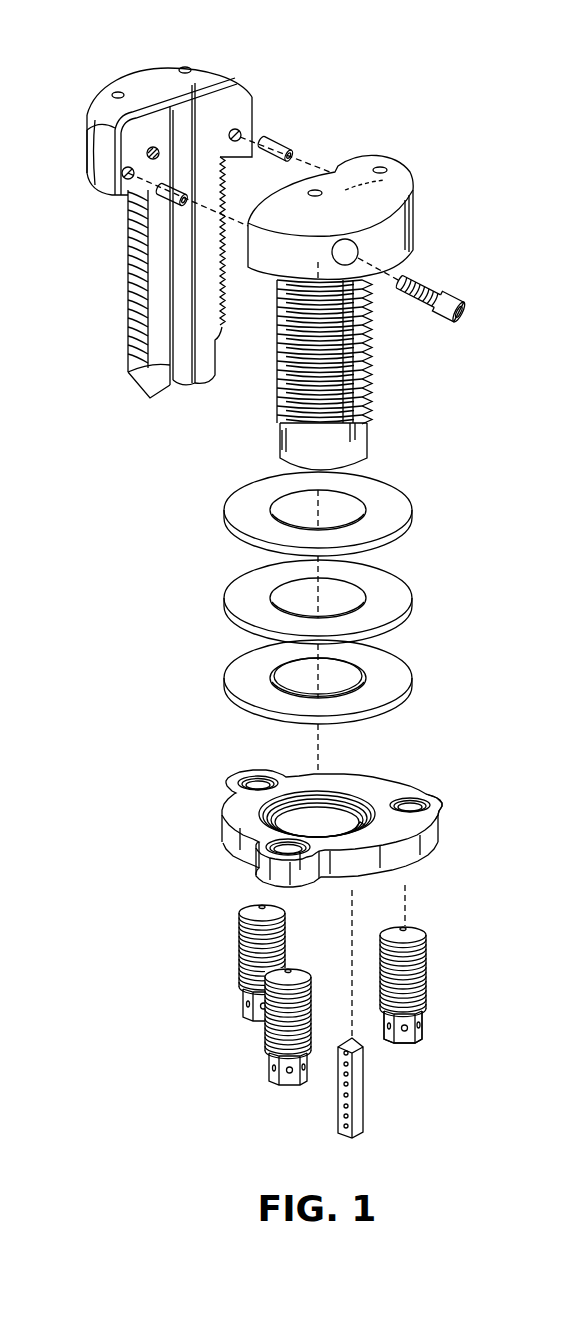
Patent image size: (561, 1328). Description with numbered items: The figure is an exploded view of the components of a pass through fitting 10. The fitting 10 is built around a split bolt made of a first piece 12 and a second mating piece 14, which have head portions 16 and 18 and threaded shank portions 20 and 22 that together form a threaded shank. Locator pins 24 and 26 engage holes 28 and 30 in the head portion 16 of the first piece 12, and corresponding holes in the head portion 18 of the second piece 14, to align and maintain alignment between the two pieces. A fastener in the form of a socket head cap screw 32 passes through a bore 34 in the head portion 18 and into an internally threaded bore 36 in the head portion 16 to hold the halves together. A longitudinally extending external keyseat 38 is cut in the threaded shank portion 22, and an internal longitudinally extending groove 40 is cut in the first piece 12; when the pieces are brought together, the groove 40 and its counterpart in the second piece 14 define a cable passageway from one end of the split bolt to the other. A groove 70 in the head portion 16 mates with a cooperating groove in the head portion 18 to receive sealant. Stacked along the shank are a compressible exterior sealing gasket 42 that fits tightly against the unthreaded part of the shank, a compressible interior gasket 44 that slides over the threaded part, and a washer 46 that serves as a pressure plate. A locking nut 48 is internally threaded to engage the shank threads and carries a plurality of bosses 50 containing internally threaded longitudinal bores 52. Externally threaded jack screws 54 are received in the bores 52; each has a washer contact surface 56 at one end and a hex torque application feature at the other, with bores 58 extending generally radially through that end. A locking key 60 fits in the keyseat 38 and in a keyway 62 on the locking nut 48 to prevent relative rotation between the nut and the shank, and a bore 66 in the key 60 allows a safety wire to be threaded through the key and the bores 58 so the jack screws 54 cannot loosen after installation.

The pass through fitting 10 is at (498, 212).
The split bolt first piece 12 is at (255, 94).
The split bolt second mating piece 14 is at (391, 148).
The head portion 16 is at (222, 68).
The head portion 18 is at (410, 178).
The threaded shank portion 20 is at (128, 318).
The threaded shank portion 22 is at (374, 380).
The locator pin 24 is at (279, 148).
The locator pin 26 is at (160, 194).
The locator pin hole 28 is at (244, 128).
The locator pin hole 30 is at (128, 163).
The socket head cap screw 32 is at (470, 305).
The bore 34 is at (328, 258).
The internally threaded bore 36 is at (156, 145).
The external keyseat 38 is at (352, 433).
The internal longitudinally extending groove 40 is at (140, 373).
The compressible exterior sealing gasket 42 is at (412, 512).
The compressible interior gasket 44 is at (412, 600).
The washer 46 is at (412, 678).
The locking nut 48 is at (222, 828).
The bosses 50 is at (440, 820).
The internally threaded bores 52 is at (411, 793).
The jack screws 54 is at (428, 975).
The washer contact surfaces 56 is at (260, 905).
The bores 58 is at (405, 1040).
The locking key 60 is at (364, 1108).
The keyway 62 is at (362, 828).
The bore 66 is at (345, 1118).
The groove 70 is at (100, 162).